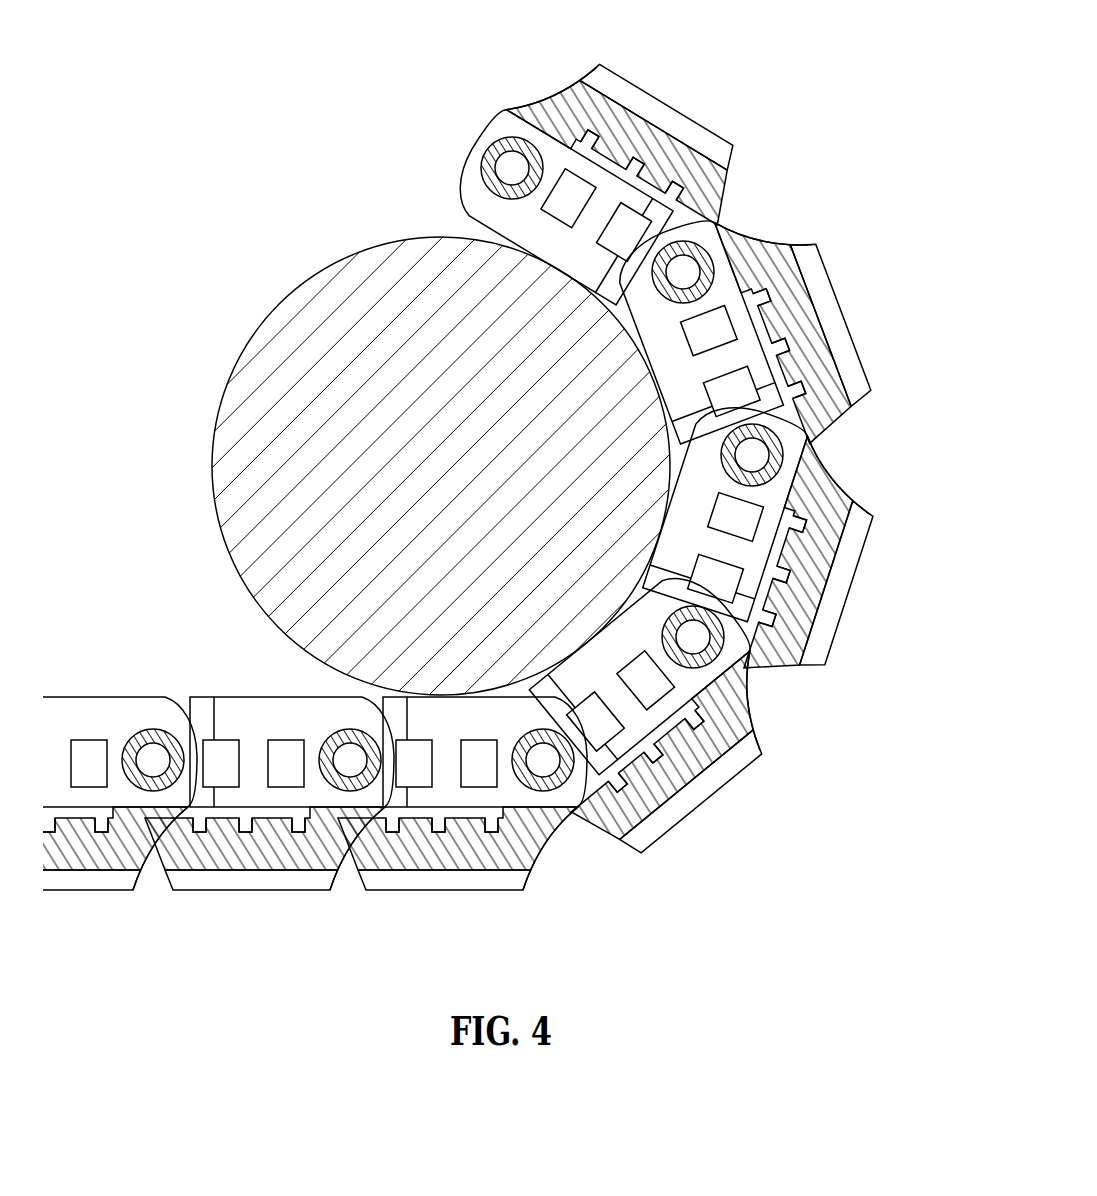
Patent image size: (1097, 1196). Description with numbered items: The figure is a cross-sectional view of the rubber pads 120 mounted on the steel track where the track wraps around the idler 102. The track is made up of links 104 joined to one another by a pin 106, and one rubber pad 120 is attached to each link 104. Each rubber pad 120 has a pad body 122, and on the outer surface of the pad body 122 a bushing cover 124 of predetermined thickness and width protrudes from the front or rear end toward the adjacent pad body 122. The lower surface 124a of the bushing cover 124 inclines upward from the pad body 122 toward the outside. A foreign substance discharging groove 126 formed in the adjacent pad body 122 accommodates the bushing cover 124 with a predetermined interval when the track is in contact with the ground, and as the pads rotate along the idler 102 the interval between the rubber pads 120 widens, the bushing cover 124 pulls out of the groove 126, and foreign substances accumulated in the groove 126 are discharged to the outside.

The idler 102 is at (237, 497).
The link plate 104 is at (468, 152).
The pin 106 is at (508, 168).
The rubber pad 120 is at (481, 491).
The pad body 122 is at (695, 133).
The bushing cover 124 is at (705, 224).
The lower surface of the bushing cover 124a is at (738, 230).
The foreign substance discharging groove 126 is at (695, 215).